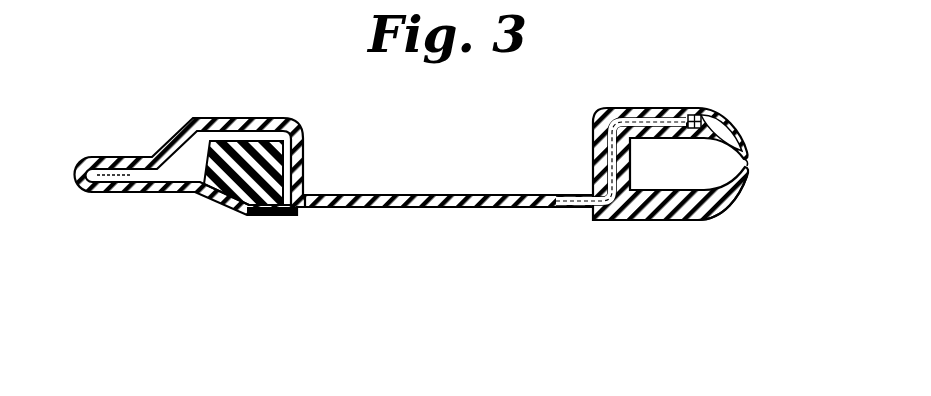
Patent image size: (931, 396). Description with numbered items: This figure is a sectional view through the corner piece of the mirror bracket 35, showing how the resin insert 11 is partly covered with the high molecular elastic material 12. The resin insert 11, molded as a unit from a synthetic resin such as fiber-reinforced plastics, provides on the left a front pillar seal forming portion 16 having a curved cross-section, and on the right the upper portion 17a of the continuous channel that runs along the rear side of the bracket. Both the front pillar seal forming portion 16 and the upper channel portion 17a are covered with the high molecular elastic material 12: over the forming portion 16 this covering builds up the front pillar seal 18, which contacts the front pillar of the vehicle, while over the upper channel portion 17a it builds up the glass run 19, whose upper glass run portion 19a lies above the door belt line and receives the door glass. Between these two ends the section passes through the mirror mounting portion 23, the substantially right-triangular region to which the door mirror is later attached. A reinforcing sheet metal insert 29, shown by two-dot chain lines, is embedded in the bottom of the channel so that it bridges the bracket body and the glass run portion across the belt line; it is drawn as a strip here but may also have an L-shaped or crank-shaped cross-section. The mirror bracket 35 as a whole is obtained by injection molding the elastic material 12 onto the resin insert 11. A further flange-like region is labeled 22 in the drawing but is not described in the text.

The resin insert 11 is at (488, 208).
The high molecular elastic material 12 is at (274, 208).
The front pillar seal forming portion 16 is at (237, 131).
The upper portion of the channel 17a is at (648, 112).
The front pillar seal 18 is at (207, 183).
The glass run 19 is at (747, 161).
The upper glass run portion 19a is at (712, 112).
The flange 22 is at (142, 186).
The mirror mounting portion 23 is at (447, 194).
The reinforcing sheet metal insert 29 is at (608, 148).
The mirror bracket 35 is at (612, 224).